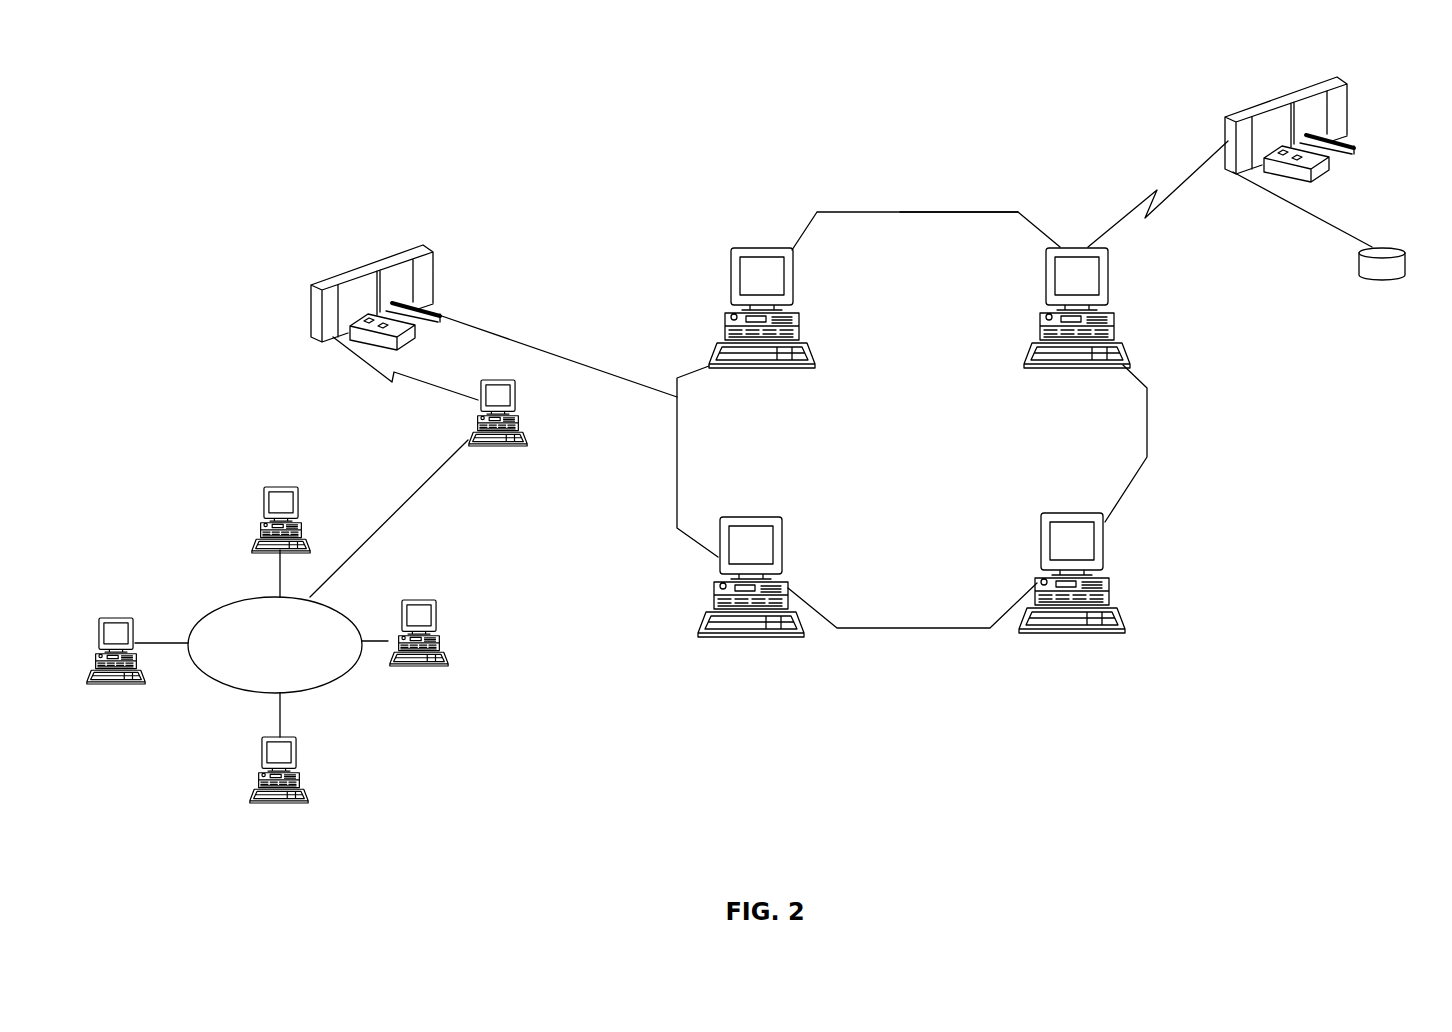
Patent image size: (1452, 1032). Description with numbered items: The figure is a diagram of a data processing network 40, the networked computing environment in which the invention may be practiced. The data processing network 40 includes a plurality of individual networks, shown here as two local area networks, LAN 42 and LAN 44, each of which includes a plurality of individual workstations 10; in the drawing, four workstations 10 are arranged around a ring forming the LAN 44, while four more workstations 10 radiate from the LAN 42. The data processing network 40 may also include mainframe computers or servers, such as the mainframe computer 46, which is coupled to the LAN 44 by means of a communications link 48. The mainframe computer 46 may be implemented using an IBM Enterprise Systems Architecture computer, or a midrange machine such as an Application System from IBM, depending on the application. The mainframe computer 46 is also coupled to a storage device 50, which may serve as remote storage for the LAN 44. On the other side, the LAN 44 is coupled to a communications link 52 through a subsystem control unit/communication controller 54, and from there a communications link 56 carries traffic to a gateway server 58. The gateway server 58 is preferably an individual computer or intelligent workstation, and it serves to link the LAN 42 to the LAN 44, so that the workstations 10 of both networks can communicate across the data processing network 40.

The workstation 10 is at (747, 247).
The data processing network 40 is at (927, 203).
The LAN 42 is at (301, 588).
The LAN 44 is at (912, 420).
The mainframe computer 46 is at (1290, 93).
The communications link 48 is at (1175, 185).
The storage device 50 is at (1393, 248).
The communications link 52 is at (560, 358).
The subsystem control unit/communication controller 54 is at (427, 247).
The communications link 56 is at (337, 348).
The gateway server 58 is at (487, 380).